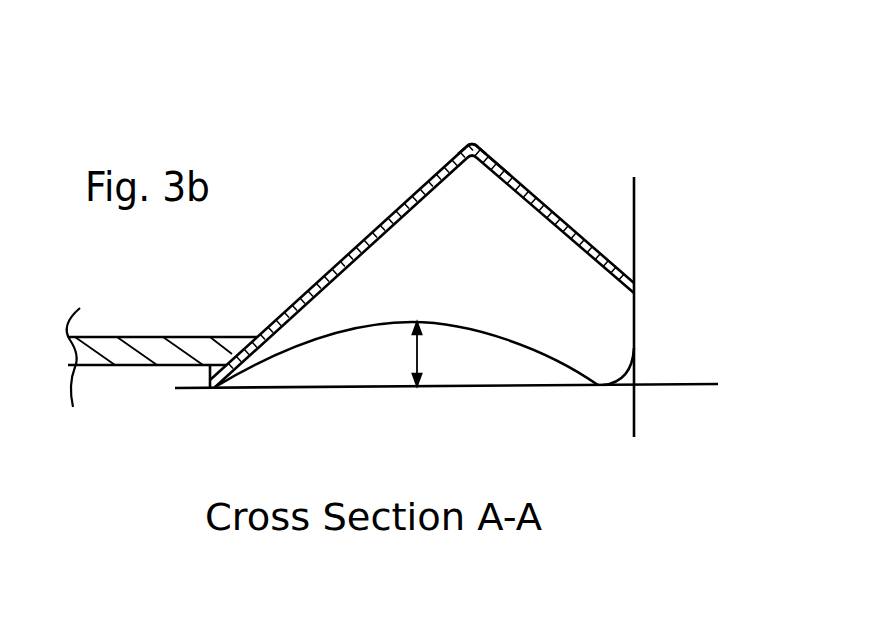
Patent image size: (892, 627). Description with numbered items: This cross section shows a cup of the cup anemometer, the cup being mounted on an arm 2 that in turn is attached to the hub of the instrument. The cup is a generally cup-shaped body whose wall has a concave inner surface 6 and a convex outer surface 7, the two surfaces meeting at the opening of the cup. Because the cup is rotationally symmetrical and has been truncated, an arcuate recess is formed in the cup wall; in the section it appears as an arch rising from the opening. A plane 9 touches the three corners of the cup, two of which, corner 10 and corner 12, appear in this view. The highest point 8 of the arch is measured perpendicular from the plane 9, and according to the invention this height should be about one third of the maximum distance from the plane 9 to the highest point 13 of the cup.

The arm 2 is at (133, 337).
The concave inner surface 6 is at (507, 178).
The convex outer surface 7 is at (355, 240).
The highest point of the arch 8 is at (417, 318).
The plane 9 is at (517, 388).
The corner of the cup 10 is at (223, 390).
The corner of the cup 12 is at (632, 387).
The highest point of the cup 13 is at (465, 150).